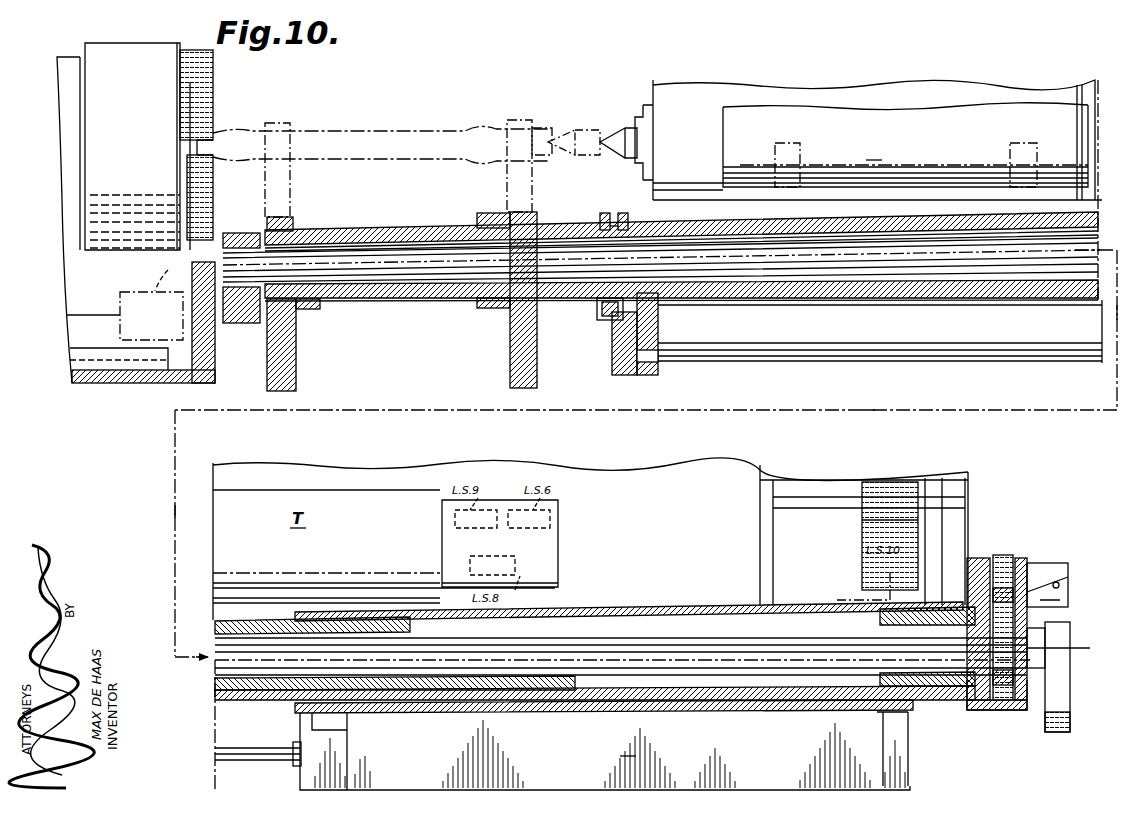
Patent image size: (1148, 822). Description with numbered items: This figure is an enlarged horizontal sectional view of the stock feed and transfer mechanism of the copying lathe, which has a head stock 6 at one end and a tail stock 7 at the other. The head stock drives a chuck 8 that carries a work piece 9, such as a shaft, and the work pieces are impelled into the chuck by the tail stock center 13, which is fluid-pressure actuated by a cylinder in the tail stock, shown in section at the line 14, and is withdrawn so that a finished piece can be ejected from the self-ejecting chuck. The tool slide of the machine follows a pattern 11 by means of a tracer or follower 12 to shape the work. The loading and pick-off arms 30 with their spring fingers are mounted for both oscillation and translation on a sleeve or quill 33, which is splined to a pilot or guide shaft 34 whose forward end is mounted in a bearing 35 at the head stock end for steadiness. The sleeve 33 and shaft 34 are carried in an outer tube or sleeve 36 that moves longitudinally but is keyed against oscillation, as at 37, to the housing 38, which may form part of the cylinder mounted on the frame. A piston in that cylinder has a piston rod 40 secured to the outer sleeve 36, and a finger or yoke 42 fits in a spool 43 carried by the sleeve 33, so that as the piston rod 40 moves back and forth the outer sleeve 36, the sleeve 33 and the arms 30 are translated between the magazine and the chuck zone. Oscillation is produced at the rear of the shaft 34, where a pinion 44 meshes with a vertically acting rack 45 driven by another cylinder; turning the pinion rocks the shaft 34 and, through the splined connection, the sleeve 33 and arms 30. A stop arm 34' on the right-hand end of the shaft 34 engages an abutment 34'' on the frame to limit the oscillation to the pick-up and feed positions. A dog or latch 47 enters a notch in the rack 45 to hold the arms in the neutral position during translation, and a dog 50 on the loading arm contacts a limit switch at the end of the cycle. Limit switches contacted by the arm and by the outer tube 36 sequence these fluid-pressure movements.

The head stock 6 is at (62, 262).
The tail stock 7 is at (773, 82).
The chuck 8 is at (205, 118).
The work piece 9 is at (386, 126).
The pattern 11 is at (405, 382).
The tracer or follower 12 is at (375, 748).
The tail stock center 13 is at (560, 125).
The section line 14 is at (600, 576).
The loading and pick-off arm 30 is at (281, 123).
The sleeve or quill 33 is at (433, 229).
The pilot or guide shaft 34 is at (658, 444).
The stop arm 34' is at (1051, 693).
The abutment 34'' is at (1039, 614).
The bearing 35 is at (244, 233).
The outer tube or sleeve 36 is at (770, 308).
The key 37 is at (540, 713).
The housing 38 is at (641, 602).
The piston rod 40 is at (862, 363).
The finger or yoke 42 is at (612, 340).
The spool 43 is at (616, 213).
The pinion 44 is at (1005, 690).
The rack 45 is at (1068, 575).
The dog or latch 47 is at (1001, 558).
The dog 50 is at (600, 318).